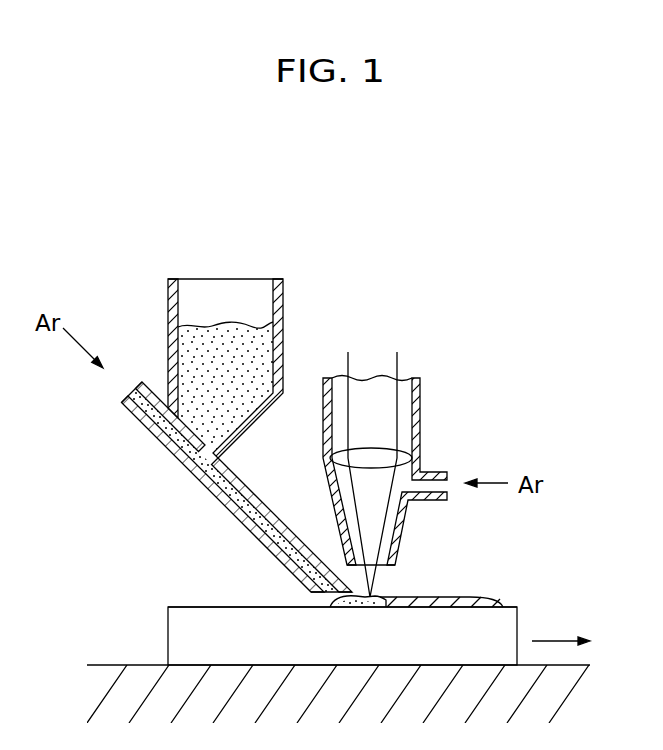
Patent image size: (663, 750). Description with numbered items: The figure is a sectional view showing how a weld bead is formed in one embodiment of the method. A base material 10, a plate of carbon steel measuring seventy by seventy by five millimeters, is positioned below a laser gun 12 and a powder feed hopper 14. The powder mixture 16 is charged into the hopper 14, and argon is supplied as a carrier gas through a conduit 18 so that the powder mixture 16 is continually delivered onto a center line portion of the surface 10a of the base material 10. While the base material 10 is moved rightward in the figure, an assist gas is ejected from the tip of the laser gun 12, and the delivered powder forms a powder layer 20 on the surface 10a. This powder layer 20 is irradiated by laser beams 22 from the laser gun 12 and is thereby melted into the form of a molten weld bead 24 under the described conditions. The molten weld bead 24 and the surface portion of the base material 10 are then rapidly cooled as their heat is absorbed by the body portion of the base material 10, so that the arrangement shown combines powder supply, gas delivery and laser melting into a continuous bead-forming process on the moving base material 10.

The base material 10 is at (177, 640).
The surface of the base material 10a is at (204, 606).
The laser gun 12 is at (434, 423).
The powder feed hopper 14 is at (284, 287).
The powder mixture 16 is at (207, 340).
The conduit 18 is at (168, 447).
The powder layer 20 is at (347, 605).
The laser beams 22 is at (333, 497).
The molten weld bead 24 is at (470, 598).